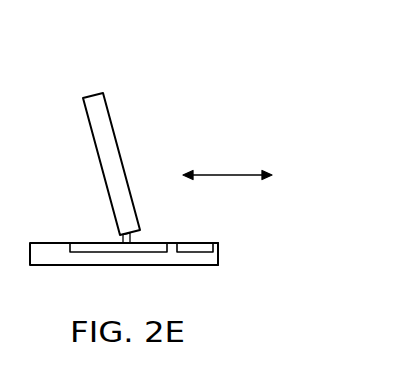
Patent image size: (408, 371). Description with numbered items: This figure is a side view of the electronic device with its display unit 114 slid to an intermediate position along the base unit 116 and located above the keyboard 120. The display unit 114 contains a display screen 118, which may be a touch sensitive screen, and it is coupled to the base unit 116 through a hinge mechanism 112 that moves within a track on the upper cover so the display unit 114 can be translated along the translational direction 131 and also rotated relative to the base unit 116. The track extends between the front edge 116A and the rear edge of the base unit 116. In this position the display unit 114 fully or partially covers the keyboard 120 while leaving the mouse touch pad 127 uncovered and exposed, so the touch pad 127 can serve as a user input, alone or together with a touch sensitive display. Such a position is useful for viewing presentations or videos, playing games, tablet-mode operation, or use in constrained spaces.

The display unit 114 is at (93, 86).
The display screen 118 is at (113, 128).
The hinge mechanism 112 is at (121, 241).
The base unit 116 is at (231, 242).
The front edge 116A is at (222, 257).
The keyboard 120 is at (148, 252).
The mouse touch pad 127 is at (189, 249).
The translational direction 131 is at (229, 175).